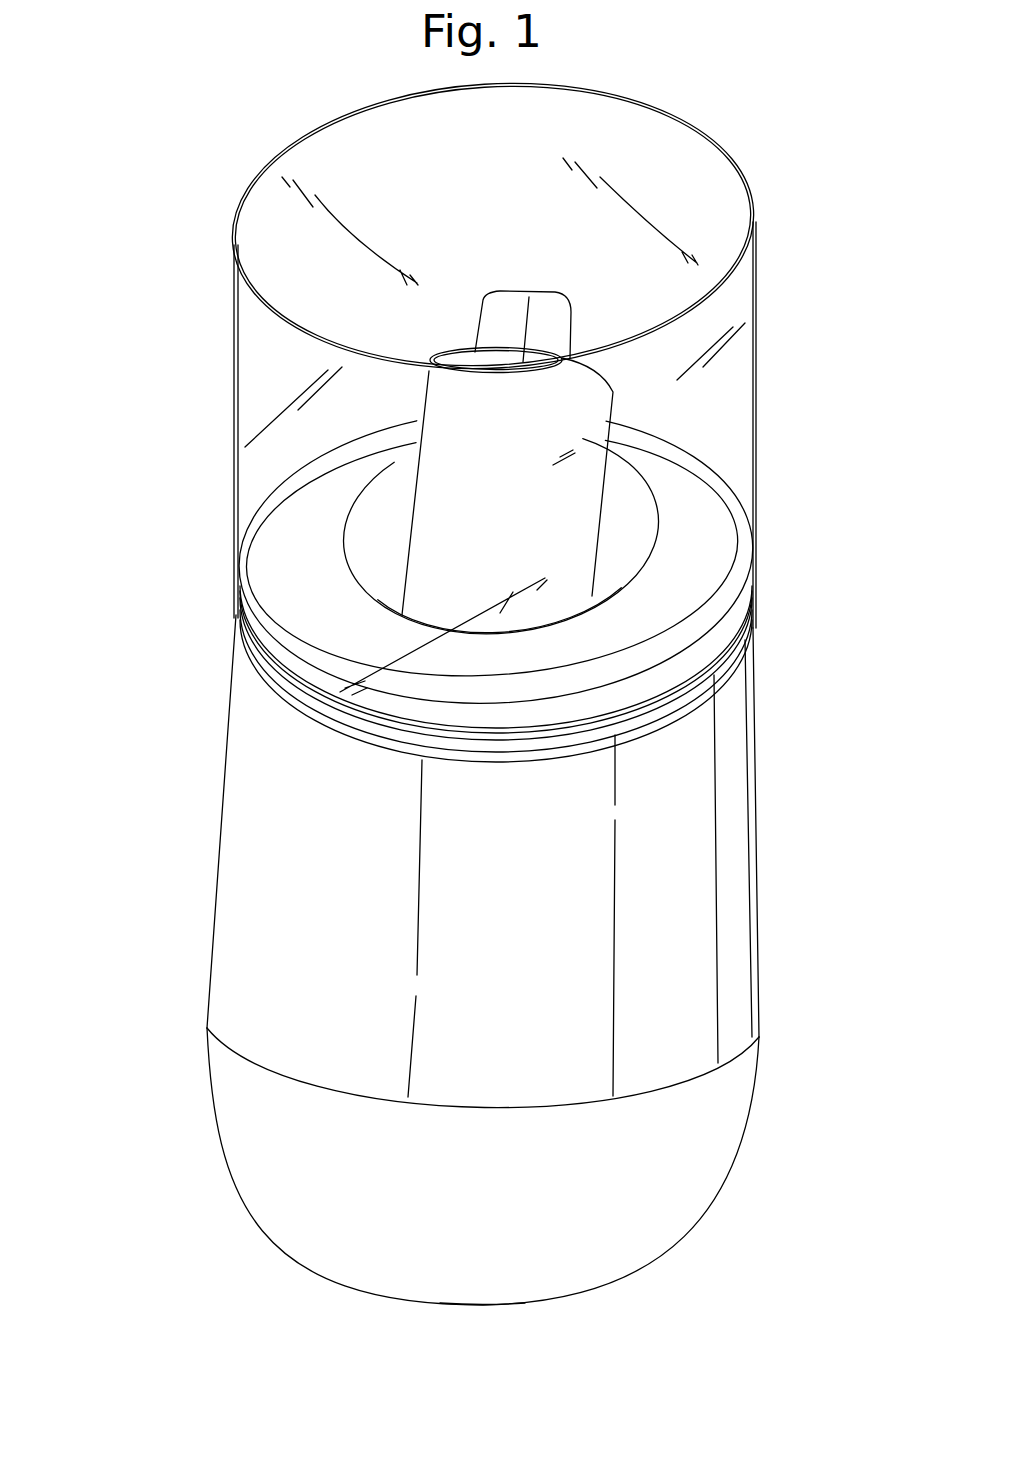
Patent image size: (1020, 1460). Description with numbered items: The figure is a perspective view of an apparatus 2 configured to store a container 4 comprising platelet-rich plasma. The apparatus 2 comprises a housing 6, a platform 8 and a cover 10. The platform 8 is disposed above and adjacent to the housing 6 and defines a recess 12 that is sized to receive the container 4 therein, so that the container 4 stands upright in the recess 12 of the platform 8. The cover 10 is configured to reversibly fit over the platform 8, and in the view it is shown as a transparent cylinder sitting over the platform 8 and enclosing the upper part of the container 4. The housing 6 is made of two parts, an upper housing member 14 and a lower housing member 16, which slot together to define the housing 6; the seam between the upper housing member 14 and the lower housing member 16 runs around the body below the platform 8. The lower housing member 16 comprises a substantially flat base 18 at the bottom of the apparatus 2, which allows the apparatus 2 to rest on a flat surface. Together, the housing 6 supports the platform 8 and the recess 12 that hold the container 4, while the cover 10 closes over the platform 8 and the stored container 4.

The apparatus 2 is at (186, 1168).
The container 4 is at (588, 390).
The housing 6 is at (218, 820).
The platform 8 is at (263, 518).
The cover 10 is at (246, 347).
The recess 12 is at (387, 541).
The upper housing member 14 is at (725, 848).
The lower housing member 16 is at (668, 1157).
The base 18 is at (513, 1304).